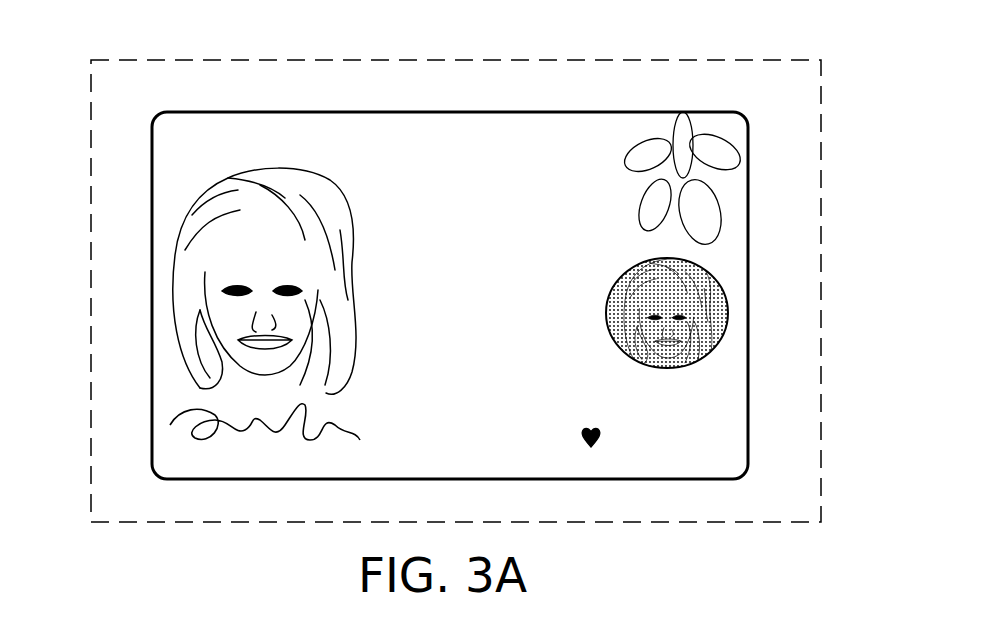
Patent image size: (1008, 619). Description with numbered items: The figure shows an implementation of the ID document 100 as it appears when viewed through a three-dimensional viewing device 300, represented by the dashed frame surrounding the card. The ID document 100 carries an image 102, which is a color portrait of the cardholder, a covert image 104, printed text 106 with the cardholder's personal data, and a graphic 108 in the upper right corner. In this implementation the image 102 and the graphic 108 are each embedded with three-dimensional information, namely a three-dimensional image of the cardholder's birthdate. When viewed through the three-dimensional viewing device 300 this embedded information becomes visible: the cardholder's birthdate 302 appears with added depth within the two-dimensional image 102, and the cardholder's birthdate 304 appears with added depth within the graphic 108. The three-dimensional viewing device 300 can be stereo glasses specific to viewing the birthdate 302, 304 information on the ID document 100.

The ID document 100 is at (125, 115).
The image 102 is at (190, 353).
The covert image 104 is at (728, 337).
The text 106 is at (487, 283).
The graphic 108 is at (720, 208).
The 3D viewing device 300 is at (824, 82).
The cardholder's birthdate 302 is at (200, 268).
The cardholder's birthdate 304 is at (732, 164).